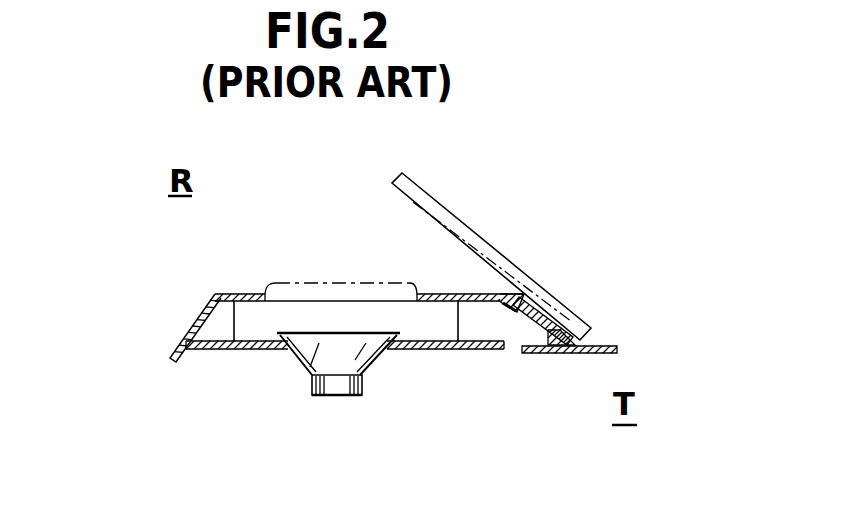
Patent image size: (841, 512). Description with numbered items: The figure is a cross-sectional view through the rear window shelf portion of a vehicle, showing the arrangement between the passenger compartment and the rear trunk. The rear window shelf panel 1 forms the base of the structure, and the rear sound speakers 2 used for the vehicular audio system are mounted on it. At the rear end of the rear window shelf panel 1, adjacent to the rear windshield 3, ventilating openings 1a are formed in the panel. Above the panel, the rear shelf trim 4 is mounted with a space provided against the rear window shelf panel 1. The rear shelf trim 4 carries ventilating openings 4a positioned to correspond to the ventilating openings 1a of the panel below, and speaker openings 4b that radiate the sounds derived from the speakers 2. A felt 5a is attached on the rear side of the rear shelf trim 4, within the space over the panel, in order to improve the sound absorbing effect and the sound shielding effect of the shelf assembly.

The rear window shelf panel 1 is at (232, 350).
The ventilating openings 1a is at (505, 350).
The rear sound speakers 2 is at (339, 382).
The rear windshield 3 is at (568, 303).
The rear shelf trim 4 is at (212, 301).
The ventilating openings 4a is at (513, 297).
The speaker openings 4b is at (267, 282).
The felt 5a is at (432, 333).